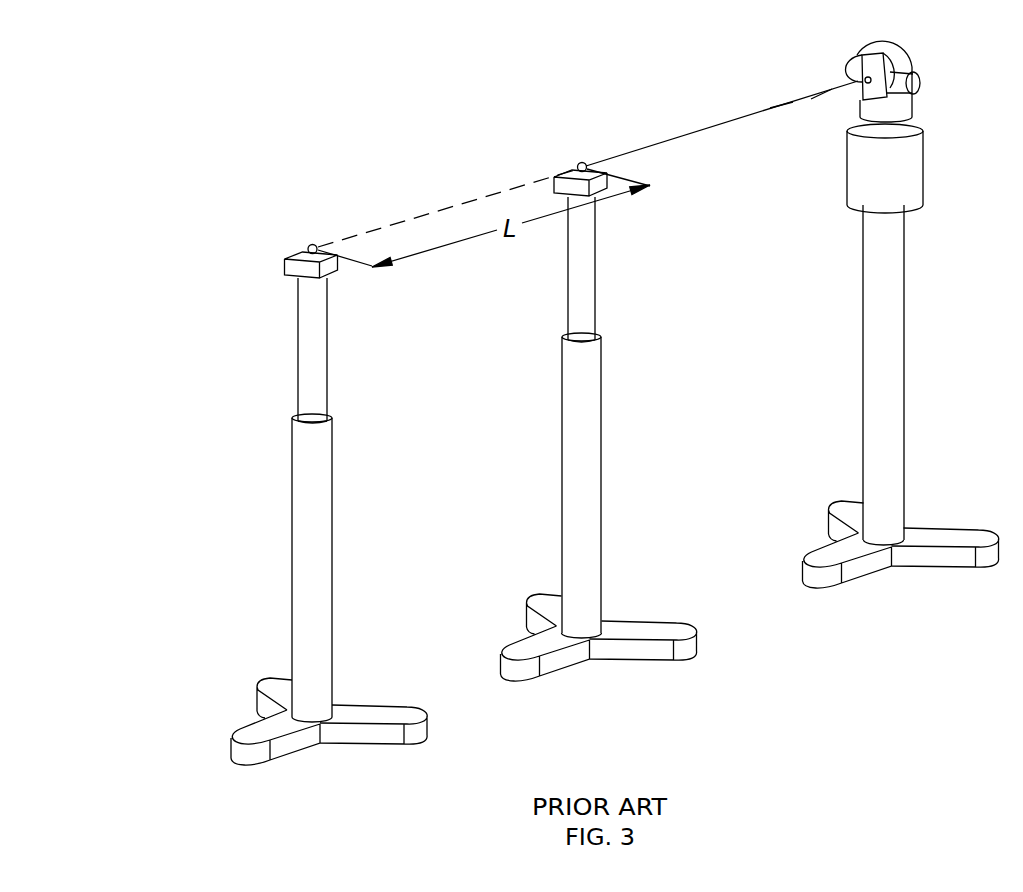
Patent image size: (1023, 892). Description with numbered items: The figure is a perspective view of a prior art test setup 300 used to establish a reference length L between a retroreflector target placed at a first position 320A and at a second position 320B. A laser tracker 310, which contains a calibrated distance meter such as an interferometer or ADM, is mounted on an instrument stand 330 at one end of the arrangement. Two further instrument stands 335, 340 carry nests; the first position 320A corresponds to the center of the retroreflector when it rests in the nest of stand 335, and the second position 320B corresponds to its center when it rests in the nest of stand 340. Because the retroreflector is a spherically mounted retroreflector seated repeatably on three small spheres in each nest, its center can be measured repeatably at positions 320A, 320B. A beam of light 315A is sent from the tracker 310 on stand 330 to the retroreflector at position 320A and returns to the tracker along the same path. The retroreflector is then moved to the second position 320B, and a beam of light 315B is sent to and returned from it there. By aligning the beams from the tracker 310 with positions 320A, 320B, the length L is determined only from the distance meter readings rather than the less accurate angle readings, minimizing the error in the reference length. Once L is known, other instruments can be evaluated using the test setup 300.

The test setup 300 is at (378, 75).
The laser tracker 310 is at (835, 43).
The beam of light 315A is at (752, 115).
The beam of light 315B is at (487, 195).
The first position of retroreflector target 320A is at (580, 164).
The second position of retroreflector target 320B is at (310, 246).
The instrument stand 330 is at (848, 277).
The instrument stand 335 is at (543, 392).
The instrument stand 340 is at (275, 437).